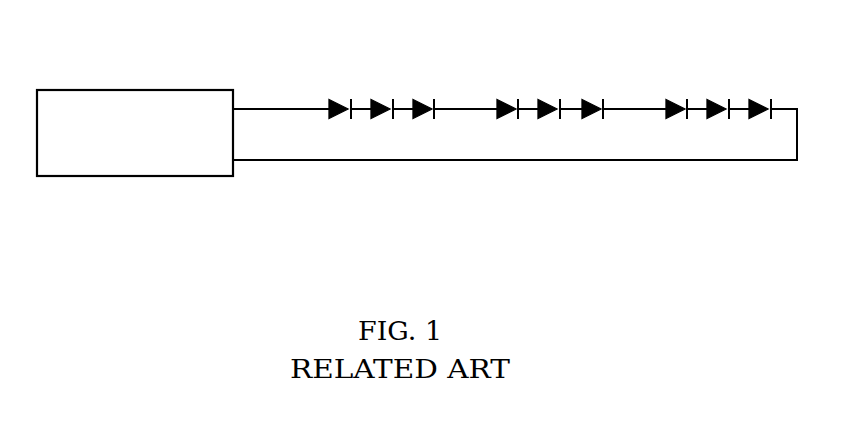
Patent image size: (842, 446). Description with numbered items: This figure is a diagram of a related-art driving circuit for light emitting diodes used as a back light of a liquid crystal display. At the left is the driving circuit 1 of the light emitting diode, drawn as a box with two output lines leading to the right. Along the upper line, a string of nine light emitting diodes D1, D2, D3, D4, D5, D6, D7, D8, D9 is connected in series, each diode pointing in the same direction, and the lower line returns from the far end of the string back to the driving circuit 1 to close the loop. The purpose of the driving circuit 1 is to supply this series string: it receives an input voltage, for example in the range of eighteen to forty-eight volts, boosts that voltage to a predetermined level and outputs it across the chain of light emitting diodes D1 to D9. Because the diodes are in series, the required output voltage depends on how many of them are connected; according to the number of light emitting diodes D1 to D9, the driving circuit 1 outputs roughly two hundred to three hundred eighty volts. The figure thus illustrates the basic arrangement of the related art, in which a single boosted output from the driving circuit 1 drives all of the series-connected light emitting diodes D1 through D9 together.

The driving circuit 1 is at (135, 89).
The light emitting diode D1 is at (340, 96).
The light emitting diode D2 is at (382, 96).
The light emitting diode D3 is at (423, 96).
The light emitting diode D4 is at (508, 96).
The light emitting diode D5 is at (549, 96).
The light emitting diode D6 is at (593, 96).
The light emitting diode D7 is at (677, 96).
The light emitting diode D8 is at (718, 96).
The light emitting diode D9 is at (760, 96).